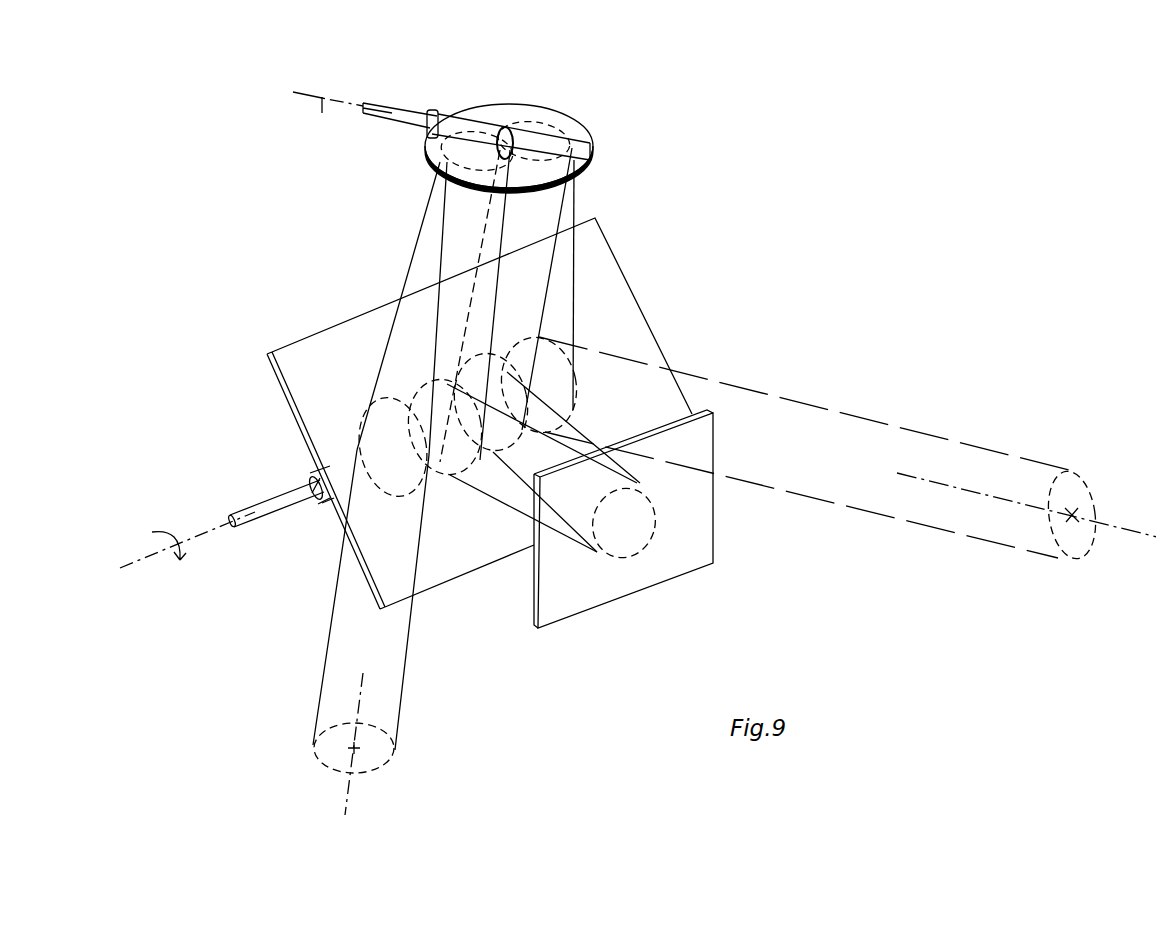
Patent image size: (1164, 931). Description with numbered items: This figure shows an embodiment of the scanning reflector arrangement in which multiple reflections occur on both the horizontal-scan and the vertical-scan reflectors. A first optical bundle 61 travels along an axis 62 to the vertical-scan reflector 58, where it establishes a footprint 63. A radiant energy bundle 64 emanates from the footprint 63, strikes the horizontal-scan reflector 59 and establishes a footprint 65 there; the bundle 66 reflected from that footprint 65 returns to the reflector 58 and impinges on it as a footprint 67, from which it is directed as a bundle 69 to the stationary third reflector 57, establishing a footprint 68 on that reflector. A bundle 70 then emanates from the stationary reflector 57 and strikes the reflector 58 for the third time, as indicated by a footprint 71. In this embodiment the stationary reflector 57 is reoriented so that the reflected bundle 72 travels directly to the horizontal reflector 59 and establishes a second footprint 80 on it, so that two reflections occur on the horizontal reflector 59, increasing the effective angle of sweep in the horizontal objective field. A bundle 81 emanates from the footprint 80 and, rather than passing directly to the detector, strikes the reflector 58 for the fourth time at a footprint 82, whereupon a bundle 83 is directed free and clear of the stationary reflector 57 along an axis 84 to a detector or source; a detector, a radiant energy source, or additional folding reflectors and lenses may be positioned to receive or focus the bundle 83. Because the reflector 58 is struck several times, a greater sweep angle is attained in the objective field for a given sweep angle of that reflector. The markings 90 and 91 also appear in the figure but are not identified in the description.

The stationary third reflector 57 is at (717, 554).
The vertical-scan reflector 58 is at (293, 410).
The horizontal-scan reflector 59 is at (590, 128).
The first optical bundle 61 is at (1030, 430).
The axis 62 is at (1115, 523).
The footprint 63 is at (565, 355).
The radiant energy bundle 64 is at (575, 205).
The footprint 65 is at (558, 123).
The bundle 66 is at (553, 270).
The footprint 67 is at (510, 450).
The footprint 68 is at (647, 540).
The bundle 69 is at (573, 428).
The bundle 70 is at (497, 500).
The footprint 71 is at (443, 378).
The reflected bundle 72 is at (428, 250).
The second footprint 80 is at (445, 116).
The bundle 81 is at (403, 273).
The footprint 82 is at (363, 410).
The bundle 83 is at (413, 623).
The axis 84 is at (352, 790).
The axis of rotation of disc 90 is at (328, 117).
The shaft and rotation direction 91 is at (140, 560).